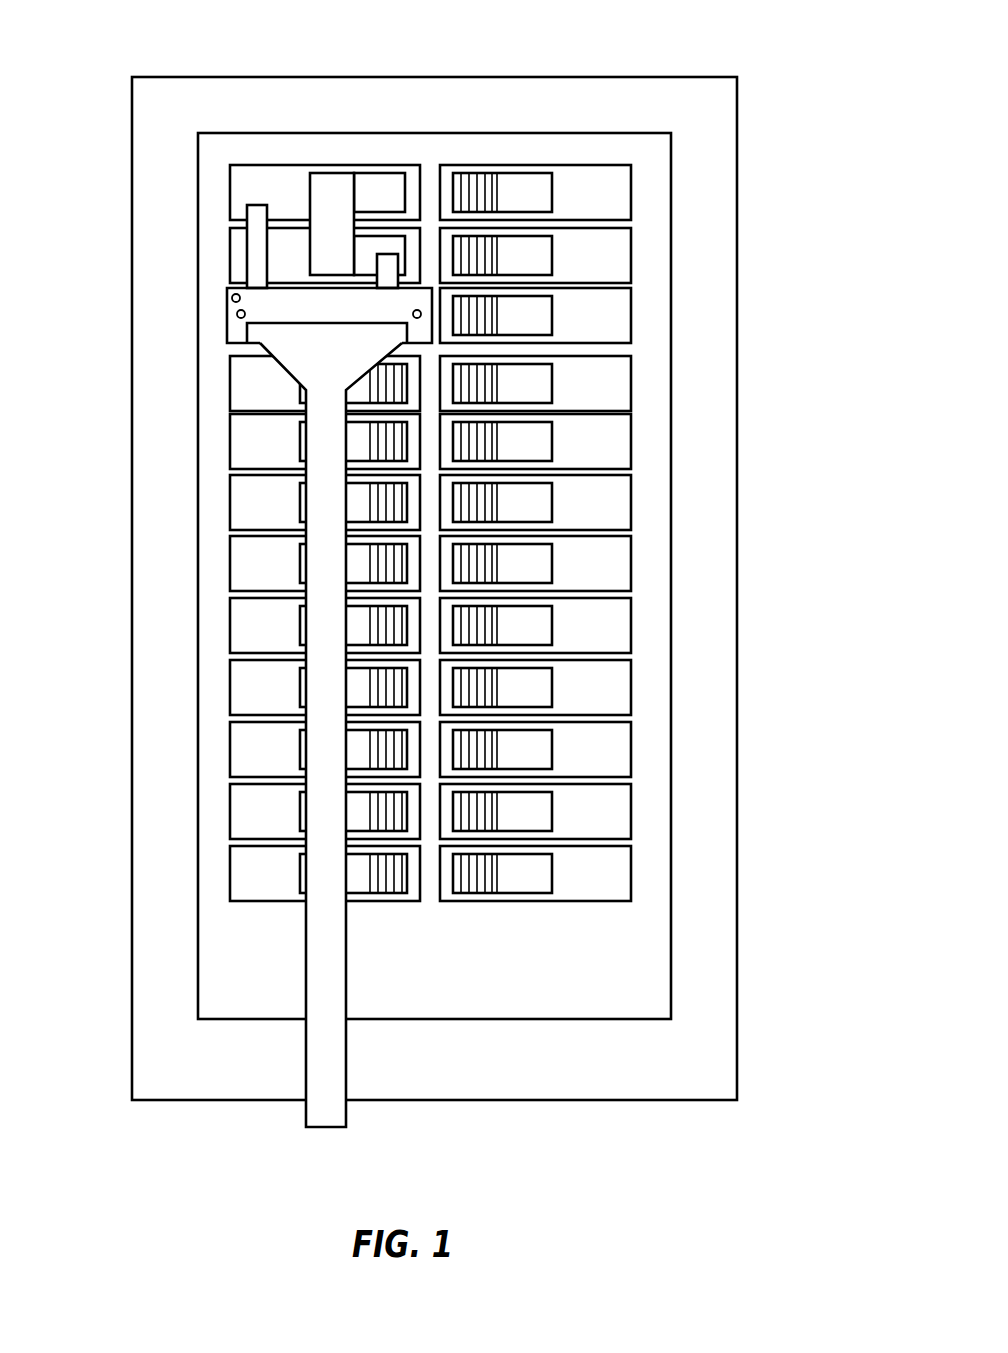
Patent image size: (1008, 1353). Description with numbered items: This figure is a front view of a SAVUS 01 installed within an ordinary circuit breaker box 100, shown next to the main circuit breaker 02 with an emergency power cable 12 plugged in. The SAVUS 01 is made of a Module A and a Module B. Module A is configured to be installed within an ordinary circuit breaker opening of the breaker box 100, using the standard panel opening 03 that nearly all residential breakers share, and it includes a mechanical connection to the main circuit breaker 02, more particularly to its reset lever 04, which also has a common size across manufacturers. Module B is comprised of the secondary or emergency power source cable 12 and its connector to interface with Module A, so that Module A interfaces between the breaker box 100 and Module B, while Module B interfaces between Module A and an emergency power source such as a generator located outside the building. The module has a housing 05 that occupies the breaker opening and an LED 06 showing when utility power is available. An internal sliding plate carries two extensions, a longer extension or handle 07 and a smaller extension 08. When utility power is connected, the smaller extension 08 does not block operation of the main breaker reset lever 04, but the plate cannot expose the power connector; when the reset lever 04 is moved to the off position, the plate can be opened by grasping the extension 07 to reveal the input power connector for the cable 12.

The circuit breaker box 100 is at (737, 157).
The SAVUS 01 is at (387, 313).
The main circuit breaker 02 is at (293, 250).
The panel opening 03 is at (415, 165).
The reset lever 04 is at (338, 182).
The housing 05 is at (283, 311).
The LED 06 is at (230, 297).
The longer extension 07 is at (258, 212).
The smaller extension 08 is at (387, 257).
The emergency power cable 12 is at (325, 498).